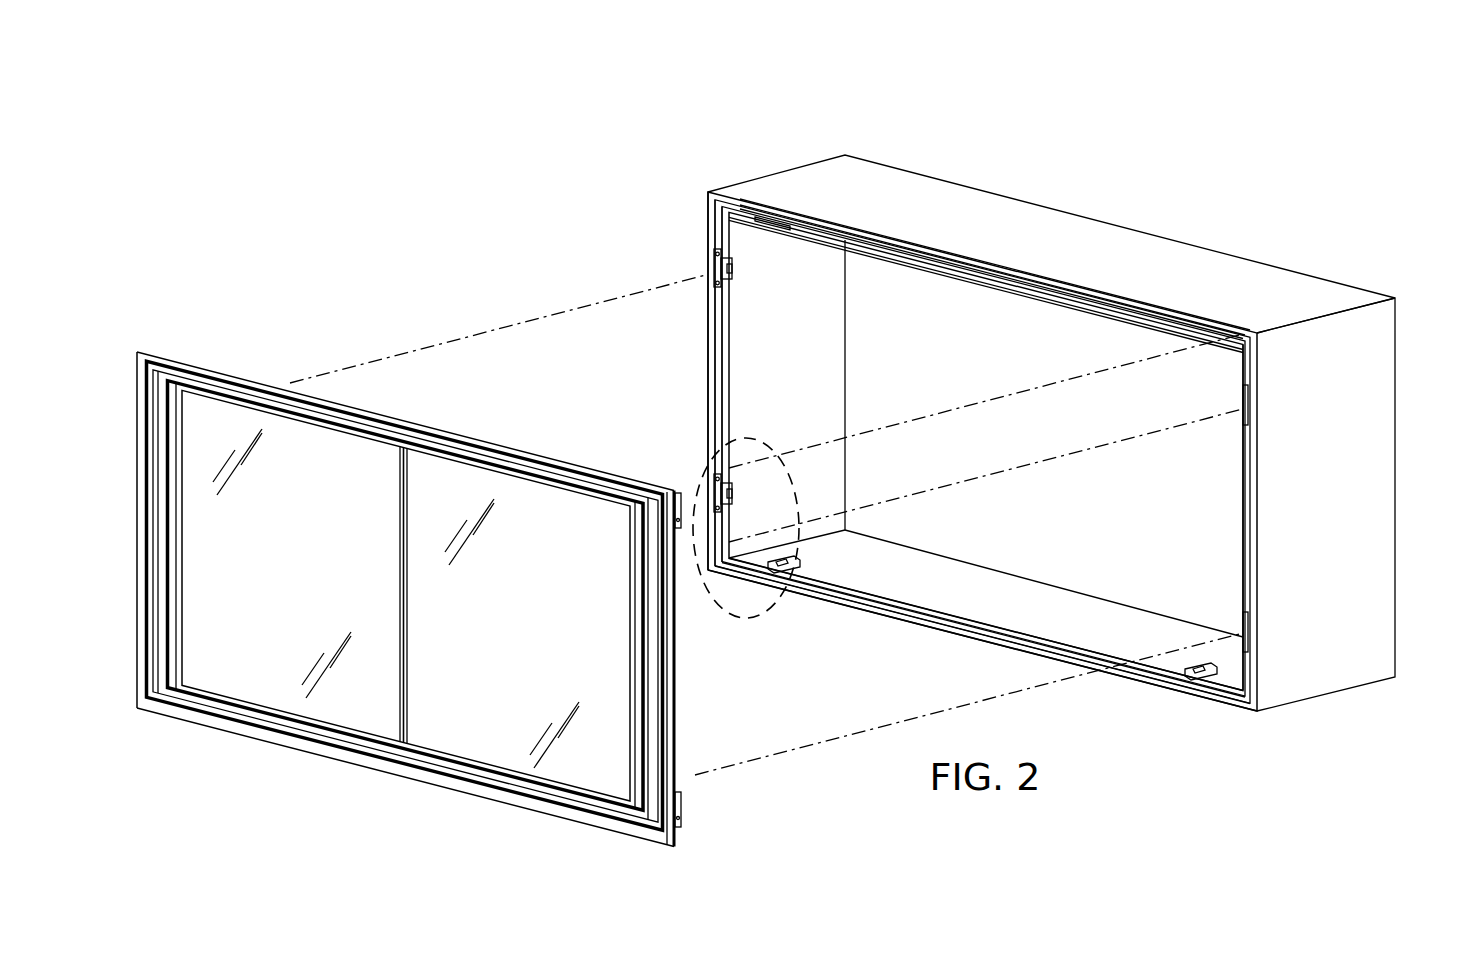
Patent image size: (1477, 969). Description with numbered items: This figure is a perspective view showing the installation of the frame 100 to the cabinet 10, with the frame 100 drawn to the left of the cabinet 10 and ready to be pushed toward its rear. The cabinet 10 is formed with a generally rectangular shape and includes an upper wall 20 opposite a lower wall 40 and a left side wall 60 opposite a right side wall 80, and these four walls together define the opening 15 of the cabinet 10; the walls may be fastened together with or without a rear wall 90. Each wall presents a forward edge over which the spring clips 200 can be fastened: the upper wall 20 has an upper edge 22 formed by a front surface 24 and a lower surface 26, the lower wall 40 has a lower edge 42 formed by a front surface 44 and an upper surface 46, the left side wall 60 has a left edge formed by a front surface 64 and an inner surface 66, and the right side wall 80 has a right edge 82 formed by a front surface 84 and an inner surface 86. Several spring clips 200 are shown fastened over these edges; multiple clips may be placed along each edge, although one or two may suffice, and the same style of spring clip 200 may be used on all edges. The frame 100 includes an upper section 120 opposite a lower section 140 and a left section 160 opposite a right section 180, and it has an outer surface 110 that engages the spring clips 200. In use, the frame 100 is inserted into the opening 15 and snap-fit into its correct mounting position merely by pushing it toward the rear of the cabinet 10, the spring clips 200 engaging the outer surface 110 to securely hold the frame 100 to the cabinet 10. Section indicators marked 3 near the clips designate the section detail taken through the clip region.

The cabinet 10 is at (1363, 470).
The opening 15 is at (930, 313).
The upper wall 20 is at (1105, 265).
The upper edge 22 is at (1175, 320).
The front surface 24 is at (1123, 312).
The lower surface 26 is at (1140, 327).
The lower wall 40 is at (1080, 625).
The lower edge 42 is at (980, 623).
The front surface 44 is at (912, 605).
The upper surface 46 is at (942, 613).
The left side wall 60 is at (762, 362).
The front surface 64 is at (717, 302).
The inner surface 66 is at (725, 403).
The right side wall 80 is at (1342, 447).
The right edge 82 is at (1250, 537).
The front surface 84 is at (1250, 598).
The inner surface 86 is at (1258, 579).
The rear wall 90 is at (1013, 353).
The frame 100 is at (590, 842).
The outer surface 110 is at (680, 730).
The upper section 120 is at (433, 428).
The lower section 140 is at (303, 756).
The left section 160 is at (137, 497).
The right section 180 is at (680, 690).
The spring clip 200 is at (775, 222).
The section view indicator 3 is at (790, 466).